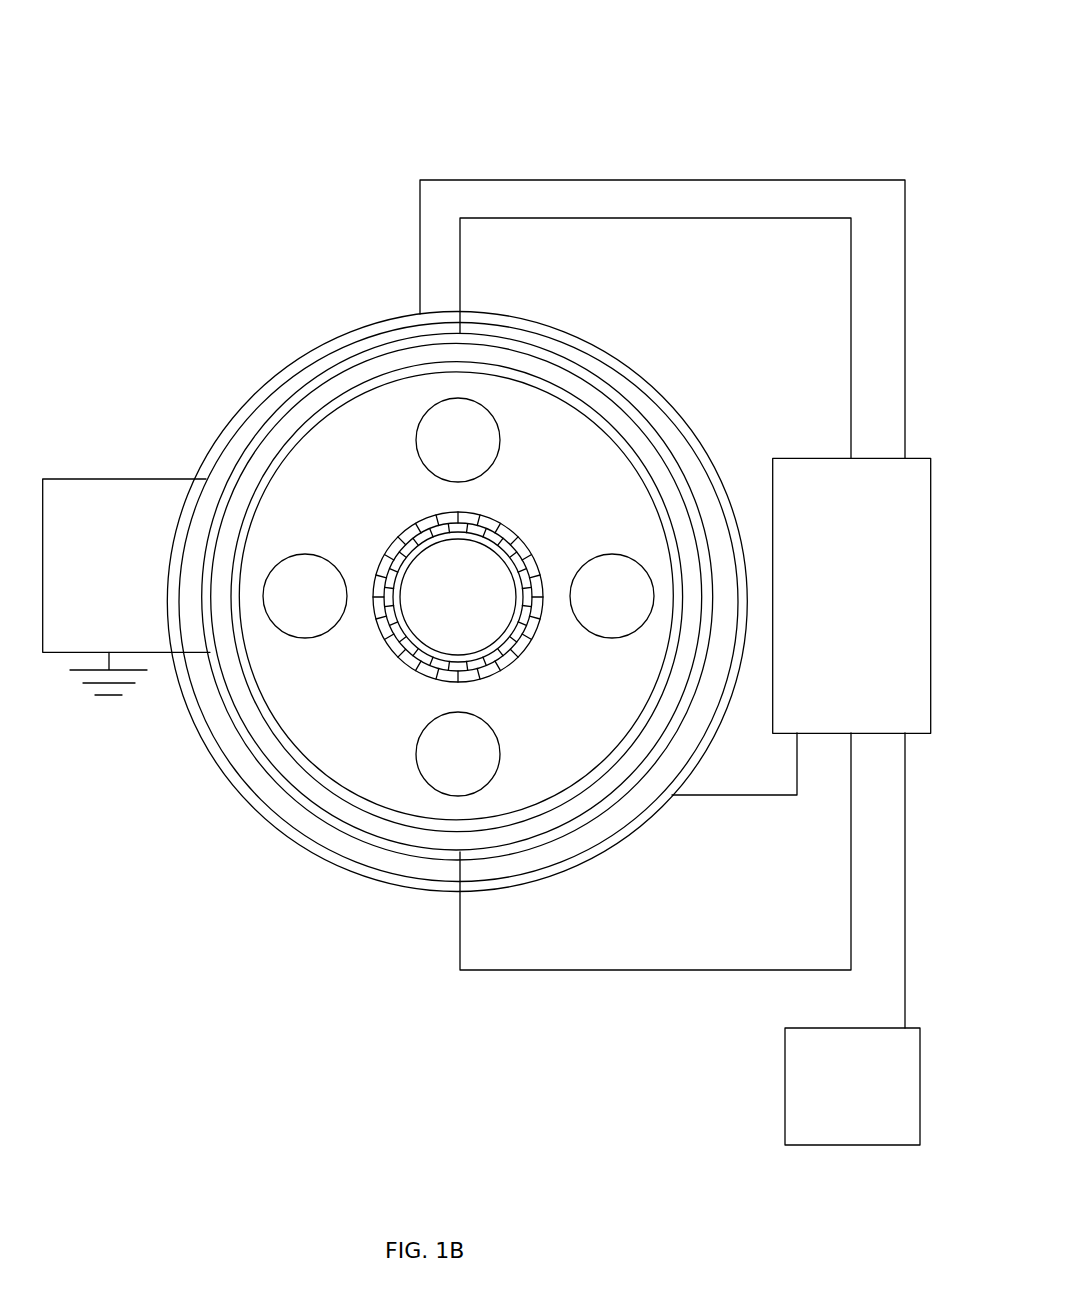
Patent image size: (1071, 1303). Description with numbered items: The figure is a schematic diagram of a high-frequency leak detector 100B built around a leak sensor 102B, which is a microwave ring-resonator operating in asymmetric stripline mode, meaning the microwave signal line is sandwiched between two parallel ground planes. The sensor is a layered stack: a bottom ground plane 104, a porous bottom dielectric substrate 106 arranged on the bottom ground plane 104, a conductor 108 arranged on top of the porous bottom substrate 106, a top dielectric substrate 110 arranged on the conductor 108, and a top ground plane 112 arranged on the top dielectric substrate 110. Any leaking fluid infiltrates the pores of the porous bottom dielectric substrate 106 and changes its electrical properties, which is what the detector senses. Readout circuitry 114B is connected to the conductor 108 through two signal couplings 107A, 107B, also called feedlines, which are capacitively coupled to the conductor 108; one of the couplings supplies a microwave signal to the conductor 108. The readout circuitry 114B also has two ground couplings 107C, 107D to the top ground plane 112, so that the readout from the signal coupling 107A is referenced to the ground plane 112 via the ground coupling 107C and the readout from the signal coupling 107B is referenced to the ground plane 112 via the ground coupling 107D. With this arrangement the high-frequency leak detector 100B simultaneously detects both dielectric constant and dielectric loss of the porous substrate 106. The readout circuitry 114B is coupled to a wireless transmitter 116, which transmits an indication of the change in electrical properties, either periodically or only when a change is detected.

The high-frequency leak detector 100B is at (781, 43).
The leak sensor 102B is at (337, 326).
The bottom ground plane 104 is at (327, 406).
The porous bottom dielectric substrate 106 is at (627, 424).
The conductor 108 is at (342, 362).
The top dielectric substrate 110 is at (626, 398).
The top ground plane 112 is at (606, 353).
The signal coupling 107A is at (680, 218).
The signal coupling 107B is at (660, 970).
The ground coupling 107C is at (580, 180).
The ground coupling 107D is at (740, 795).
The readout circuitry 114B is at (880, 609).
The wireless transmitter 116 is at (874, 1099).